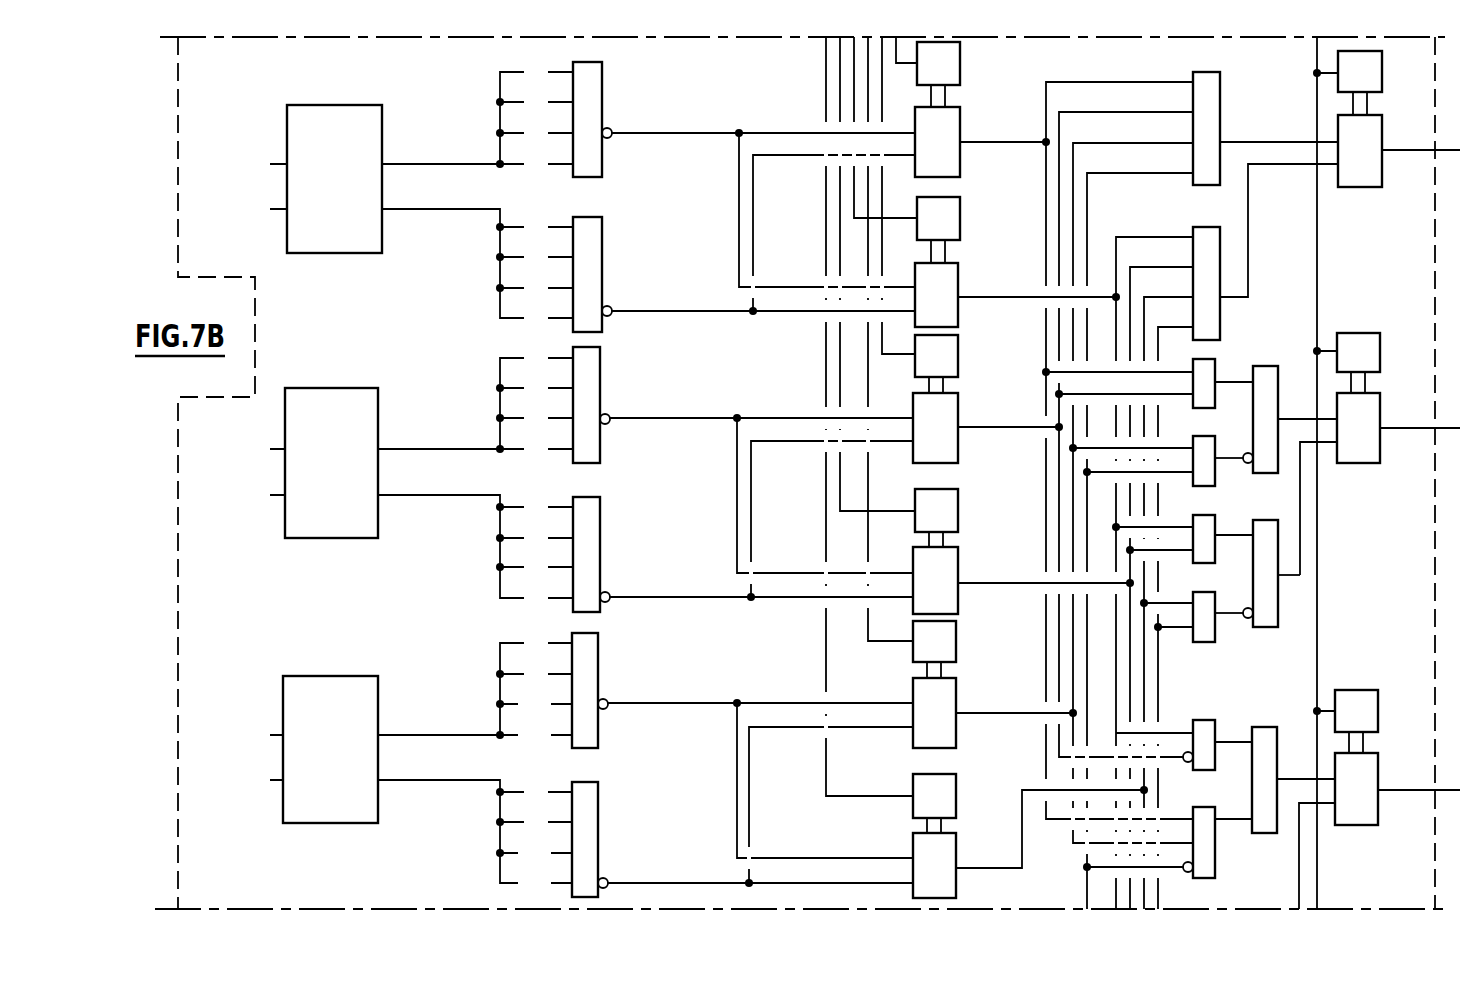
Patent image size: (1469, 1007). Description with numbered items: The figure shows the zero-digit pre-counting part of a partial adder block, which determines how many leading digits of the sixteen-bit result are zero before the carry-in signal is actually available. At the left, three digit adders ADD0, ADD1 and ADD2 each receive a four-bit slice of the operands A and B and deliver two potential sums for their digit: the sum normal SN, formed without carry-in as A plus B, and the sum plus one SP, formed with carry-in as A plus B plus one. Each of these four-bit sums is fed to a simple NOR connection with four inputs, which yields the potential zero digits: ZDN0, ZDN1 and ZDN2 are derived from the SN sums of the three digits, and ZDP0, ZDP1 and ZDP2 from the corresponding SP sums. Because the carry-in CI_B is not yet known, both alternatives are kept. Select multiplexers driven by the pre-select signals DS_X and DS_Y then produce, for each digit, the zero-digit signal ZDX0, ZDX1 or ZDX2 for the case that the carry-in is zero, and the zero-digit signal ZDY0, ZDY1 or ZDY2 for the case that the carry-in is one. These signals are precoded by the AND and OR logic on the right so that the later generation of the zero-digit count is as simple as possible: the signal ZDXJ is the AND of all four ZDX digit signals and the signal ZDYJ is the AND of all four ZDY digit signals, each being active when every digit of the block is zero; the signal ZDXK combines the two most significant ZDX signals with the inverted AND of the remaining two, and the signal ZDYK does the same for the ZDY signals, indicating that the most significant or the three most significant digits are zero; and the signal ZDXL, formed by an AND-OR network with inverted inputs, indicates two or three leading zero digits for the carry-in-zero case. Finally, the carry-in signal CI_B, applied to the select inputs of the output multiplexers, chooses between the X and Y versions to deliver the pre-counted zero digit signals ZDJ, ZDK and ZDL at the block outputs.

The digit adder 0 (A+B, A+B+1) ADD0 is at (291, 179).
The digit adder 1 ADD1 is at (288, 463).
The digit adder 2 ADD2 is at (281, 749).
The potential zero digit (sum normal) ZDN0 is at (648, 119).
The potential zero digit (sum plus one) ZDP0 is at (648, 252).
The potential zero digit (sum normal) ZDN1 is at (645, 405).
The potential zero digit (sum plus one) ZDP1 is at (645, 536).
The potential zero digit (sum normal) ZDN2 is at (645, 690).
The potential zero digit (sum plus one) ZDP2 is at (645, 821).
The zero digit signal for CI_B=0 ZDX0 is at (980, 109).
The zero digit signal for CI_B=1 ZDY0 is at (1015, 262).
The zero digit signal for CI_B=0 ZDX1 is at (986, 399).
The zero digit signal for CI_B=1 ZDY1 is at (1021, 551).
The zero digit signal for CI_B=0 ZDX2 is at (993, 684).
The zero digit signal for CI_B=1 ZDY2 is at (1028, 836).
The precoded zero digit signal J for CI_B=0 ZDXJ is at (1265, 128).
The precoded zero digit signal J for CI_B=1 ZDYJ is at (1265, 252).
The pre-counted zero digit signal ZDJ is at (1388, 119).
The precoded zero digit signal K for CI_B=0 ZDXK is at (1265, 407).
The precoded zero digit signal K for CI_B=1 ZDYK is at (1246, 591).
The pre-counted zero digit signal ZDK is at (1380, 454).
The precoded zero digit signal L for CI_B=0 ZDXL is at (1259, 784).
The pre-counted zero digit signal ZDL is at (1379, 799).